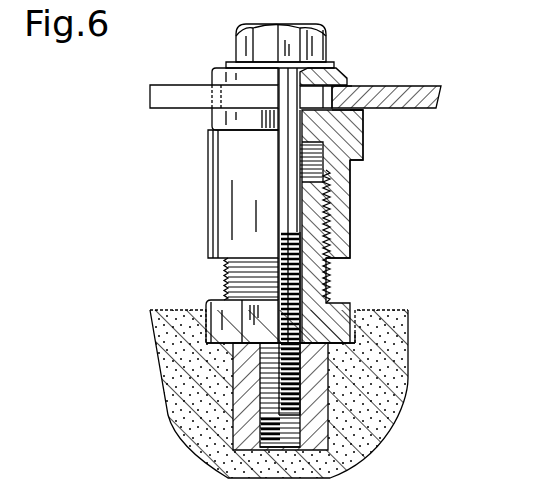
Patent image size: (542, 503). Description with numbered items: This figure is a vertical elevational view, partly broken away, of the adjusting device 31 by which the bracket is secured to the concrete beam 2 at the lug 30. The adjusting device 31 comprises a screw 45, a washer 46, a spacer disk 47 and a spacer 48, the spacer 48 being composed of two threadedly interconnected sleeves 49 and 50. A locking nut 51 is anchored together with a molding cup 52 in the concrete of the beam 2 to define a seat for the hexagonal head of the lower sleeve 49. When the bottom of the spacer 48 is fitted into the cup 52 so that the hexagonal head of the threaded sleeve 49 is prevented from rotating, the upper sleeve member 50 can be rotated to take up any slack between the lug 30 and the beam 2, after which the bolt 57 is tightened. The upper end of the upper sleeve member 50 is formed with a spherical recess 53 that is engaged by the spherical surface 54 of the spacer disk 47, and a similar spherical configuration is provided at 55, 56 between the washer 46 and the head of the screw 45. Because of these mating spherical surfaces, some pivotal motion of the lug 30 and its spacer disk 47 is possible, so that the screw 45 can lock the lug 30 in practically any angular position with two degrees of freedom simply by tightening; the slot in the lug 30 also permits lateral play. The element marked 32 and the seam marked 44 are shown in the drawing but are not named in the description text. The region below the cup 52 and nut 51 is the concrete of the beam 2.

The beam 2 is at (393, 378).
The lug 30 is at (443, 93).
The adjusting device 31 is at (186, 236).
The bushing 32 is at (342, 113).
The seam 44 is at (357, 338).
The screw 45 is at (280, 217).
The washer 46 is at (350, 76).
The spacer disk 47 is at (210, 118).
The spacer 48 is at (352, 240).
The sleeve 49 is at (329, 292).
The upper sleeve member 50 is at (368, 150).
The locking nut 51 is at (323, 420).
The molding cup 52 is at (385, 310).
The spherical recess 53 is at (342, 123).
The spherical surface 54 is at (352, 132).
The spherical configuration 55 is at (327, 73).
The spherical configuration 56 is at (346, 76).
The bolt 57 is at (255, 30).